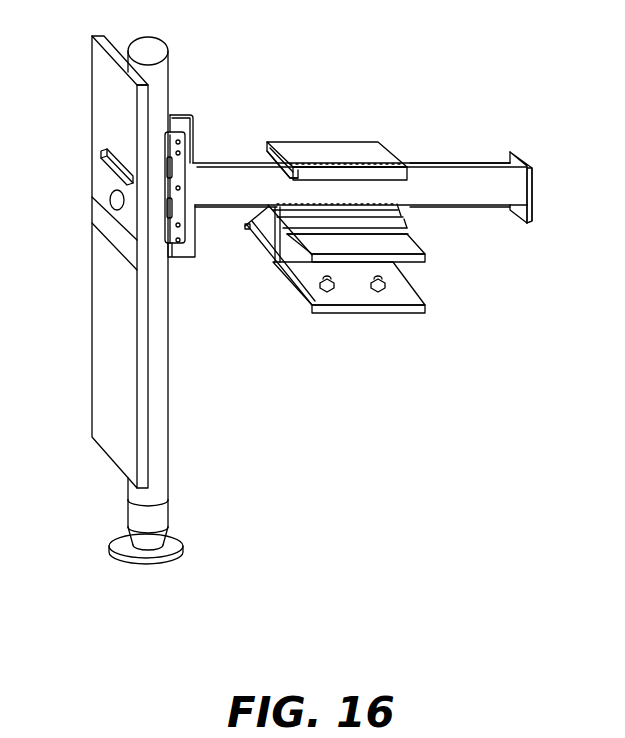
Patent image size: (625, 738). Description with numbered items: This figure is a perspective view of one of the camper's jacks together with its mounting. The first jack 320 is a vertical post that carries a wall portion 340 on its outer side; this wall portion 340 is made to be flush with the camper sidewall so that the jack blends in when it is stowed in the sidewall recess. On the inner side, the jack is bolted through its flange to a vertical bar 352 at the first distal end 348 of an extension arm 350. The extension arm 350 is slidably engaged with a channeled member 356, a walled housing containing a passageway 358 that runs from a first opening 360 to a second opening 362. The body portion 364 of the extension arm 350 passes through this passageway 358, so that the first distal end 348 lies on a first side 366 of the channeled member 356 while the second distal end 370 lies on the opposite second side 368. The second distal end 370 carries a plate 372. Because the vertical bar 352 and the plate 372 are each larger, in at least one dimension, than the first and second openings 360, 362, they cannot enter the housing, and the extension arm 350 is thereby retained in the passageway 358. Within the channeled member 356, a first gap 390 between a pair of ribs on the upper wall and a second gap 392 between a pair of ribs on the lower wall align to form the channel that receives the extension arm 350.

The first jack 320 is at (155, 413).
The wall portion 340 is at (107, 317).
The first distal end 348 is at (191, 137).
The extension arm 350 is at (457, 175).
The vertical bar 352 is at (176, 250).
The channeled member 356 is at (367, 150).
The passageway 358 is at (273, 187).
The first opening 360 is at (268, 180).
The second opening 362 is at (415, 192).
The body portion 364 is at (418, 175).
The first side 366 is at (271, 141).
The second side 368 is at (410, 242).
The second distal end 370 is at (498, 163).
The plate 372 is at (533, 190).
The first gap 390 is at (322, 167).
The second gap 392 is at (262, 212).